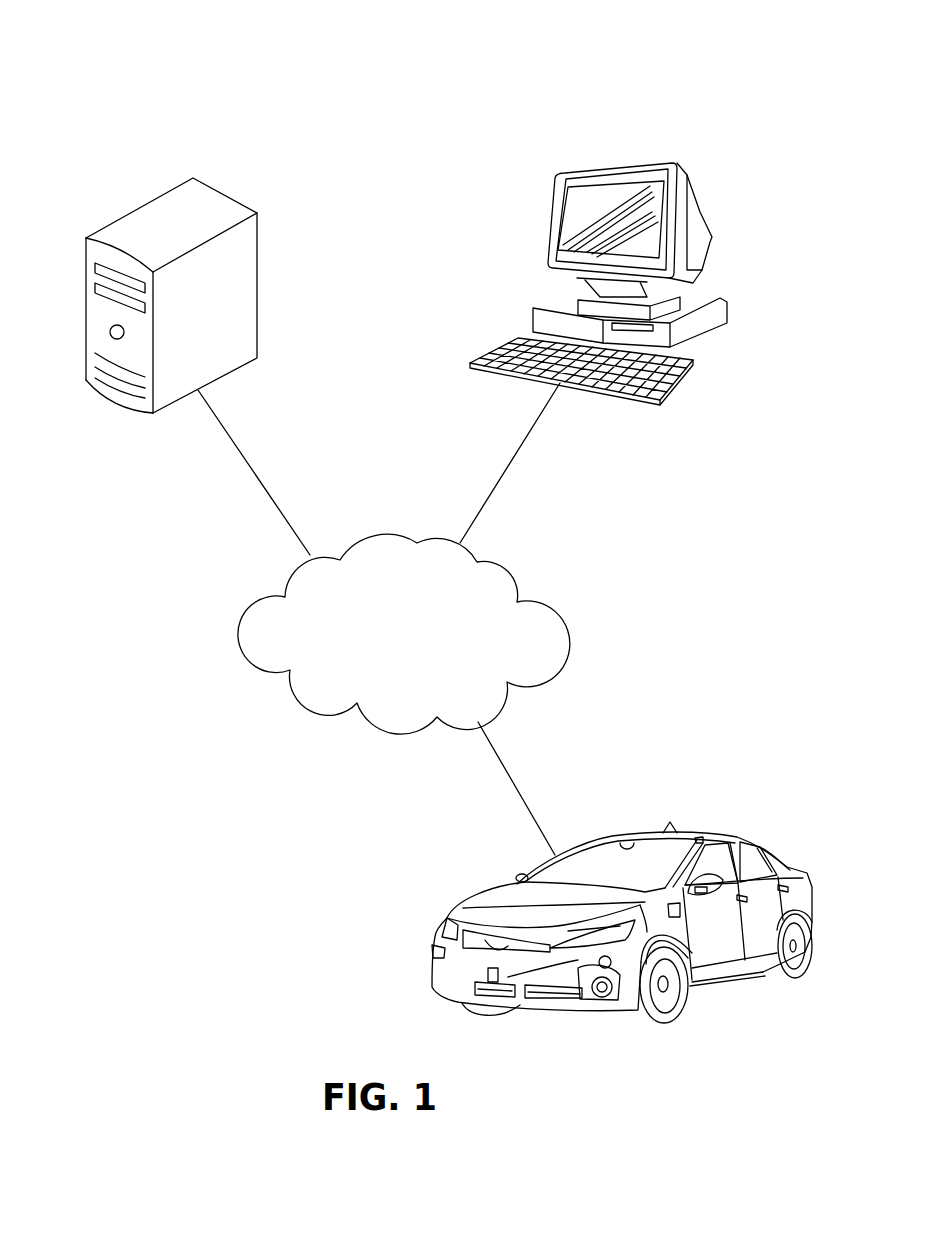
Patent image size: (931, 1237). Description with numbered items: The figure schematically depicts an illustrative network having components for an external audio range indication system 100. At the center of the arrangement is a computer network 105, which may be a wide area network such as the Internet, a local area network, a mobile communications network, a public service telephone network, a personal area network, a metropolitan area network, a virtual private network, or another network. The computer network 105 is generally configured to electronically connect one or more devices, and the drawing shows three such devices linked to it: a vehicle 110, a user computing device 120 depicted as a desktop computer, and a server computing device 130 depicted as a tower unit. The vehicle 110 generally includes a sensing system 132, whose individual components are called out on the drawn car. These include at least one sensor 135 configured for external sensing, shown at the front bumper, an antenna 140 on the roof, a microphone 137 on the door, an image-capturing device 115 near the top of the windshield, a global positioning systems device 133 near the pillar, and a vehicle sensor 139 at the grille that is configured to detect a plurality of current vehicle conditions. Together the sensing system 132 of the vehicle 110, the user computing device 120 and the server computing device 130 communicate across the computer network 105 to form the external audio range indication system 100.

The external audio range indication system 100 is at (685, 105).
The computer network 105 is at (572, 647).
The vehicle 110 is at (762, 816).
The image-capturing device 115 is at (627, 840).
The user computing device 120 is at (555, 202).
The server computing device 130 is at (100, 228).
The sensing system 132 is at (612, 1045).
The global positioning systems (GPS) device 133 is at (700, 838).
The sensor 135 is at (438, 960).
The microphone 137 is at (685, 910).
The vehicle sensor 139 is at (497, 981).
The antenna 140 is at (670, 826).